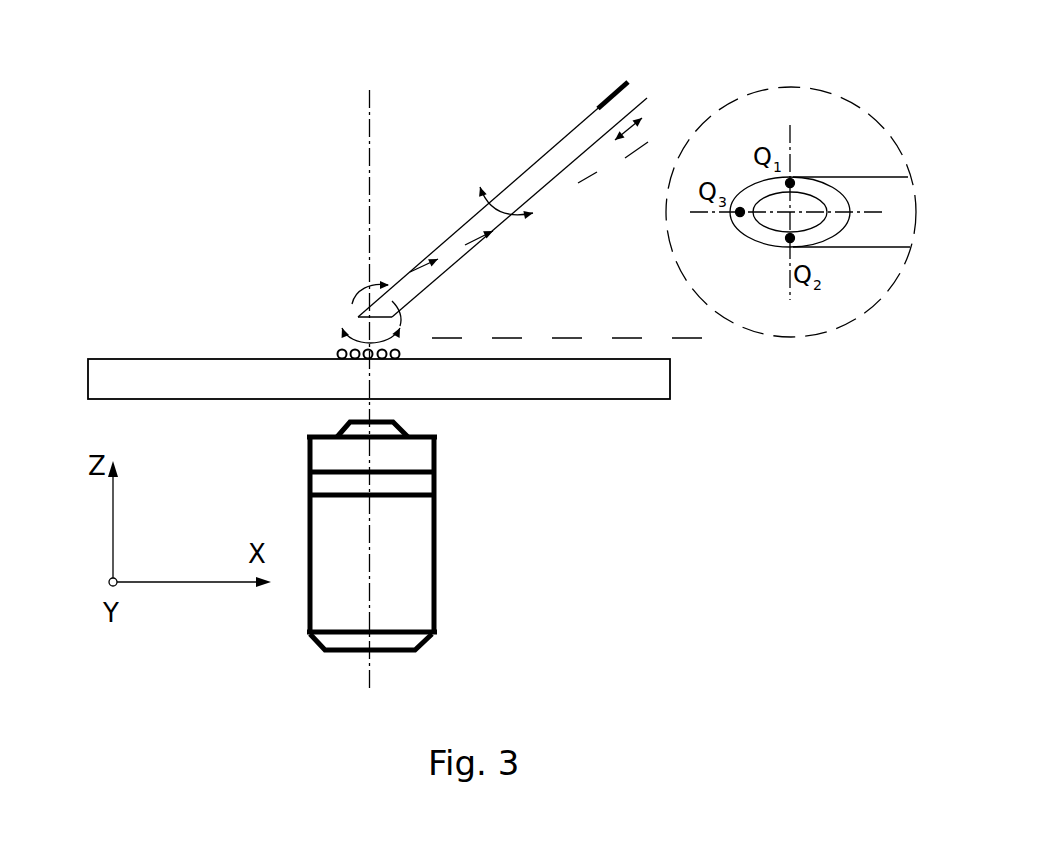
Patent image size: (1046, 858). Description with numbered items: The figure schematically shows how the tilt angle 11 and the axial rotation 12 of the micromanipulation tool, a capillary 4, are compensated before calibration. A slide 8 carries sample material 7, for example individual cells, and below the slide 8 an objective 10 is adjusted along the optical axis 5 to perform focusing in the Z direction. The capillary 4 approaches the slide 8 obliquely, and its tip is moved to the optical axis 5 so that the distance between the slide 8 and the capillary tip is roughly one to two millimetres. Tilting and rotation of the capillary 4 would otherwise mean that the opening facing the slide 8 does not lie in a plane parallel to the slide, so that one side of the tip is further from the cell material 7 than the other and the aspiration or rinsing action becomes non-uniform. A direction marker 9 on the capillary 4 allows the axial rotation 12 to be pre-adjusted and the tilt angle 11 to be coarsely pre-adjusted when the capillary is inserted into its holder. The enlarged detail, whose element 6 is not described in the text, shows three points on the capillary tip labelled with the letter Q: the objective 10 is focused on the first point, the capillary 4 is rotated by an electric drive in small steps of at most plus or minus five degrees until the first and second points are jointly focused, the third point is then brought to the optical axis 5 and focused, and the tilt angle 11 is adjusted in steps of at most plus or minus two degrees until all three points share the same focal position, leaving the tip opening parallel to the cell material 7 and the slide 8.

The capillary 4 is at (540, 163).
The optical axis 5 is at (368, 101).
The focal spot 6 is at (358, 317).
The sample material 7 is at (337, 357).
The slide 8 is at (663, 384).
The direction marker 9 is at (597, 103).
The objective 10 is at (438, 448).
The tilt angle 11 is at (393, 321).
The axial rotation 12 is at (529, 195).